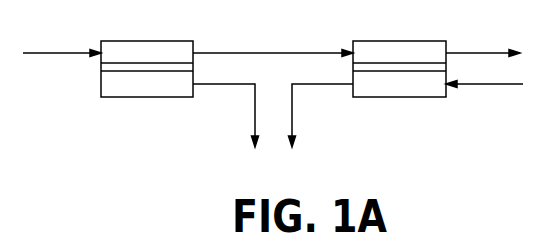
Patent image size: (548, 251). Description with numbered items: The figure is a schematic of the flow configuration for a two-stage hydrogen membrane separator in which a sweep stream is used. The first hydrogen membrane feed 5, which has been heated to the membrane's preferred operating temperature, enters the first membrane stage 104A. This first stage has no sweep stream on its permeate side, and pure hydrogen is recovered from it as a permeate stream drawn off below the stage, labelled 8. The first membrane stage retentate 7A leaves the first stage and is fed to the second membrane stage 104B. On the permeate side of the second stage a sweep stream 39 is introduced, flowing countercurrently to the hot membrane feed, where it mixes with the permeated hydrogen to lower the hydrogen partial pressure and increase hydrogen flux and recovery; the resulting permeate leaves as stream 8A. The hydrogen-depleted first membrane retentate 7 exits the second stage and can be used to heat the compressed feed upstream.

The first hydrogen membrane feed 5 is at (62, 42).
The first membrane stage retentate 7A is at (273, 42).
The first membrane retentate 7 is at (483, 43).
The first byproduct stream 8 is at (226, 115).
The second byproduct stream 8A is at (321, 115).
The sweep stream 39 is at (484, 97).
The first membrane stage 104A is at (147, 69).
The second membrane stage 104B is at (399, 69).